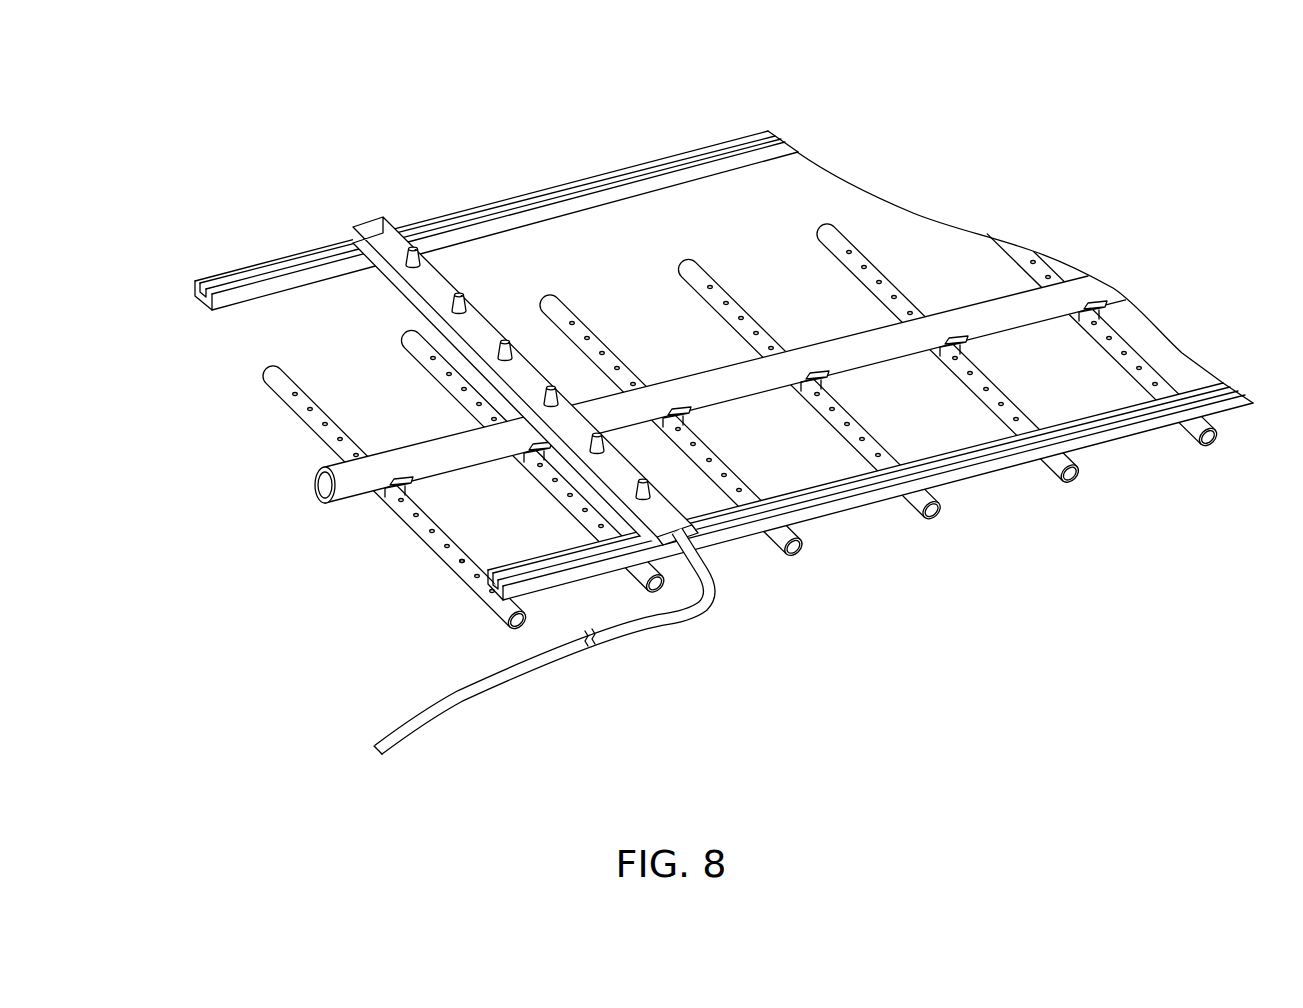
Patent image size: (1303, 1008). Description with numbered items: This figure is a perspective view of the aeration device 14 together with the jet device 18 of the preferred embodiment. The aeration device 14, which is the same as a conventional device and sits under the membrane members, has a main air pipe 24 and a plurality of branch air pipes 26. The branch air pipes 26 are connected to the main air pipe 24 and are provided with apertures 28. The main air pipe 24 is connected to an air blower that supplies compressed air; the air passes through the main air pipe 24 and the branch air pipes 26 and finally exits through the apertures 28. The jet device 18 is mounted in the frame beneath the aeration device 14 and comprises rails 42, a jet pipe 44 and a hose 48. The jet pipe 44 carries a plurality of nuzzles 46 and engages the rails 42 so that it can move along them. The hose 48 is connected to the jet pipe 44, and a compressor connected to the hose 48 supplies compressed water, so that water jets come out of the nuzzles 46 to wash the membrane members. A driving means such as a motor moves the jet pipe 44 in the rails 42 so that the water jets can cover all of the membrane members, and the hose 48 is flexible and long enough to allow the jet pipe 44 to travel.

The aeration device 14 is at (662, 440).
The jet device 18 is at (679, 422).
The main air pipe 24 is at (350, 492).
The branch air pipes 26 is at (407, 344).
The apertures 28 is at (460, 558).
The rails 42 is at (683, 154).
The jet pipe 44 is at (377, 232).
The nuzzles 46 is at (414, 252).
The hose 48 is at (633, 634).